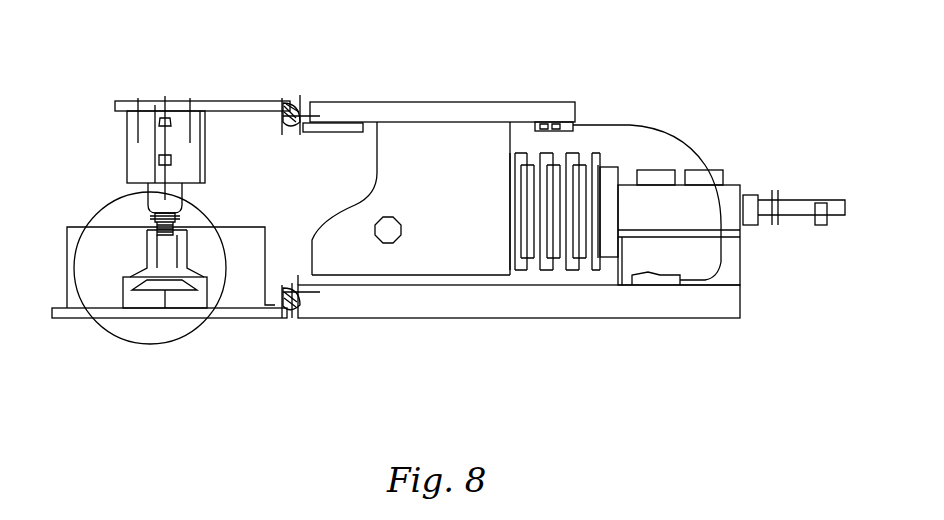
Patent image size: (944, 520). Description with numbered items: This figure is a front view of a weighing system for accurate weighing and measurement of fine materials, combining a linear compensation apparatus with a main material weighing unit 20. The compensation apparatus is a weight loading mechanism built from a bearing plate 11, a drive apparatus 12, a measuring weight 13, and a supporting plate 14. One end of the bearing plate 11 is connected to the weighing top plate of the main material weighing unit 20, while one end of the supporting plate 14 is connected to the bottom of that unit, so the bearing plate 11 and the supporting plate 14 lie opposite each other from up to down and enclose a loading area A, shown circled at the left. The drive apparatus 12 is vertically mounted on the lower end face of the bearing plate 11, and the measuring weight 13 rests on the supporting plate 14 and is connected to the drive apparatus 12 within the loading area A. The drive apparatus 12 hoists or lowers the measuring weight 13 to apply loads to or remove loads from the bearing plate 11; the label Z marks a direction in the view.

The bearing plate 11 is at (297, 103).
The drive apparatus 12 is at (167, 123).
The measuring weight 13 is at (198, 277).
The supporting plate 14 is at (285, 318).
The main material weighing unit 20 is at (560, 113).
The loading area A is at (108, 330).
The axis direction Z is at (228, 193).